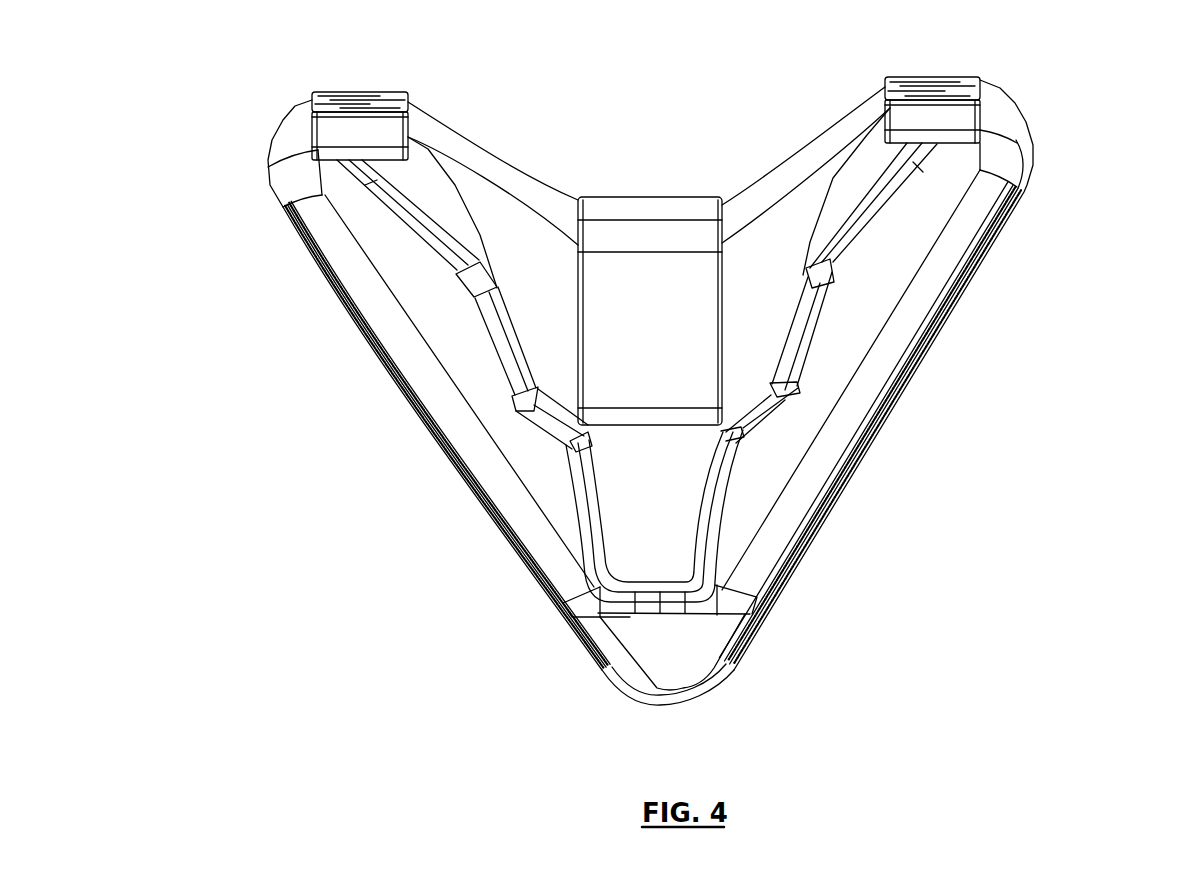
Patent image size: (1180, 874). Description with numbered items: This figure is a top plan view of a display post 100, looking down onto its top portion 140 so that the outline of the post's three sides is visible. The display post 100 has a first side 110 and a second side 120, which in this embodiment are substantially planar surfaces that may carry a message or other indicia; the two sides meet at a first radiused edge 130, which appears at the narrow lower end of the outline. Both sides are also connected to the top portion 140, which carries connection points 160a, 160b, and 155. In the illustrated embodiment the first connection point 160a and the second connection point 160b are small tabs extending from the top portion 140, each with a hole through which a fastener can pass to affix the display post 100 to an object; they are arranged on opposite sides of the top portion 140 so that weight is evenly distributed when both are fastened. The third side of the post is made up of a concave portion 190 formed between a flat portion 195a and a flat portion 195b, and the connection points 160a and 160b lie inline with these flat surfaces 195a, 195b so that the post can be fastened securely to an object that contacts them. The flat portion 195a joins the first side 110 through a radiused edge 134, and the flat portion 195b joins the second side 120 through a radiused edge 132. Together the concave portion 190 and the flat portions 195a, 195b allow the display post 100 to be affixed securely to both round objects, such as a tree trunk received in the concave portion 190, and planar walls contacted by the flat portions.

The display post 100 is at (383, 621).
The first side 110 is at (440, 449).
The second side 120 is at (843, 490).
The first radiused edge 130 is at (680, 703).
The radiused edge 132 is at (1020, 115).
The radiused edge 134 is at (270, 150).
The top portion 140 is at (873, 332).
The connection point 155 is at (700, 217).
The first connection point 160a is at (403, 137).
The second connection point 160b is at (890, 108).
The concave portion 190 is at (570, 193).
The flat portion 195a is at (343, 93).
The flat portion 195b is at (930, 73).